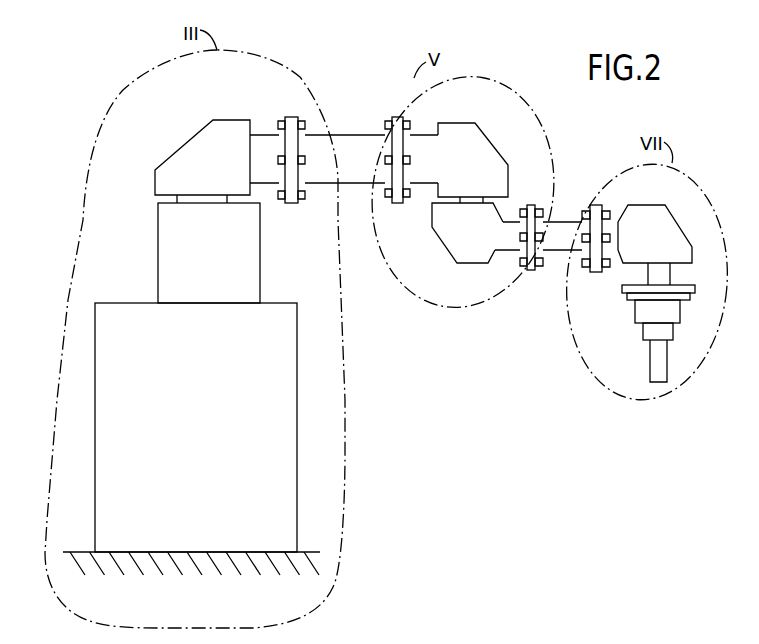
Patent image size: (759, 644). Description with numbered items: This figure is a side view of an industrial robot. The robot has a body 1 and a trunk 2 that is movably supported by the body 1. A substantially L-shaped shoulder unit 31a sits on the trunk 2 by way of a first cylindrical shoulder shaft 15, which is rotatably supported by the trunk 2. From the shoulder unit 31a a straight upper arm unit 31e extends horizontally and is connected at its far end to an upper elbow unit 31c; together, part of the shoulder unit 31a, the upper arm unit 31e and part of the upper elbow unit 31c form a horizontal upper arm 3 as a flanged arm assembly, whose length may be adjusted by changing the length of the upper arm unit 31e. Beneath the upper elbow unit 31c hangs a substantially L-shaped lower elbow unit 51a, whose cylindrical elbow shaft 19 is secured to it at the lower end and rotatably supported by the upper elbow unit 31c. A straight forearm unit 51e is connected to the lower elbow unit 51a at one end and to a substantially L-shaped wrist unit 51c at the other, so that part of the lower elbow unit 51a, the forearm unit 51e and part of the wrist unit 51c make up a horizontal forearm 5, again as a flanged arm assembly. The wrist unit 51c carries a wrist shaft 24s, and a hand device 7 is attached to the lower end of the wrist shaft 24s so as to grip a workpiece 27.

The body 1 is at (297, 438).
The trunk 2 is at (158, 236).
The horizontal upper arm 3 is at (286, 203).
The horizontal forearm 5 is at (527, 272).
The hand device 7 is at (635, 318).
The first cylindrical shoulder shaft 15 is at (177, 200).
The cylindrical elbow shaft 19 is at (470, 203).
The wrist shaft 24s is at (648, 273).
The workpiece 27 is at (650, 366).
The shoulder unit 31a is at (187, 141).
The upper elbow unit 31c is at (483, 124).
The upper arm unit 31e is at (350, 135).
The lower elbow unit 51a is at (443, 251).
The wrist unit 51c is at (668, 205).
The forearm unit 51e is at (563, 221).